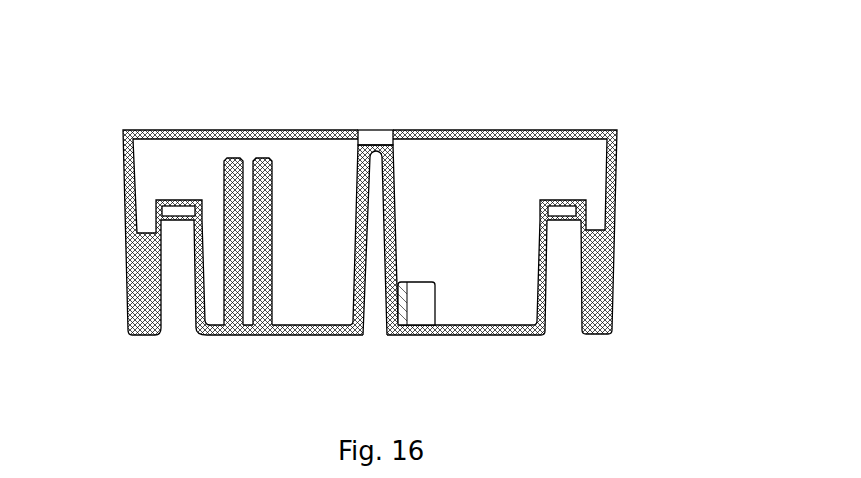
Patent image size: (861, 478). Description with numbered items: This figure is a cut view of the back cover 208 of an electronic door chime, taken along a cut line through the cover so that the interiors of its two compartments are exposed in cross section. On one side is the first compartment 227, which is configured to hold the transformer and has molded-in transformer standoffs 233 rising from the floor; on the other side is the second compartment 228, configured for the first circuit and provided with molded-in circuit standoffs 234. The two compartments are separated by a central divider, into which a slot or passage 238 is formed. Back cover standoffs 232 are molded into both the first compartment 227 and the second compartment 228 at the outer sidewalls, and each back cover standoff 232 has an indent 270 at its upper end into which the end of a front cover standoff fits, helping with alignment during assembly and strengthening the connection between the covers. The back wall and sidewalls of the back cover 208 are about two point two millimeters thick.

The back cover 208 is at (673, 117).
The first compartment 227 is at (173, 163).
The second compartment 228 is at (528, 173).
The back cover standoffs 232 is at (148, 257).
The transformer standoffs 233 is at (267, 175).
The circuit standoffs 234 is at (420, 297).
The slot 238 is at (373, 282).
The indents 270 is at (563, 207).